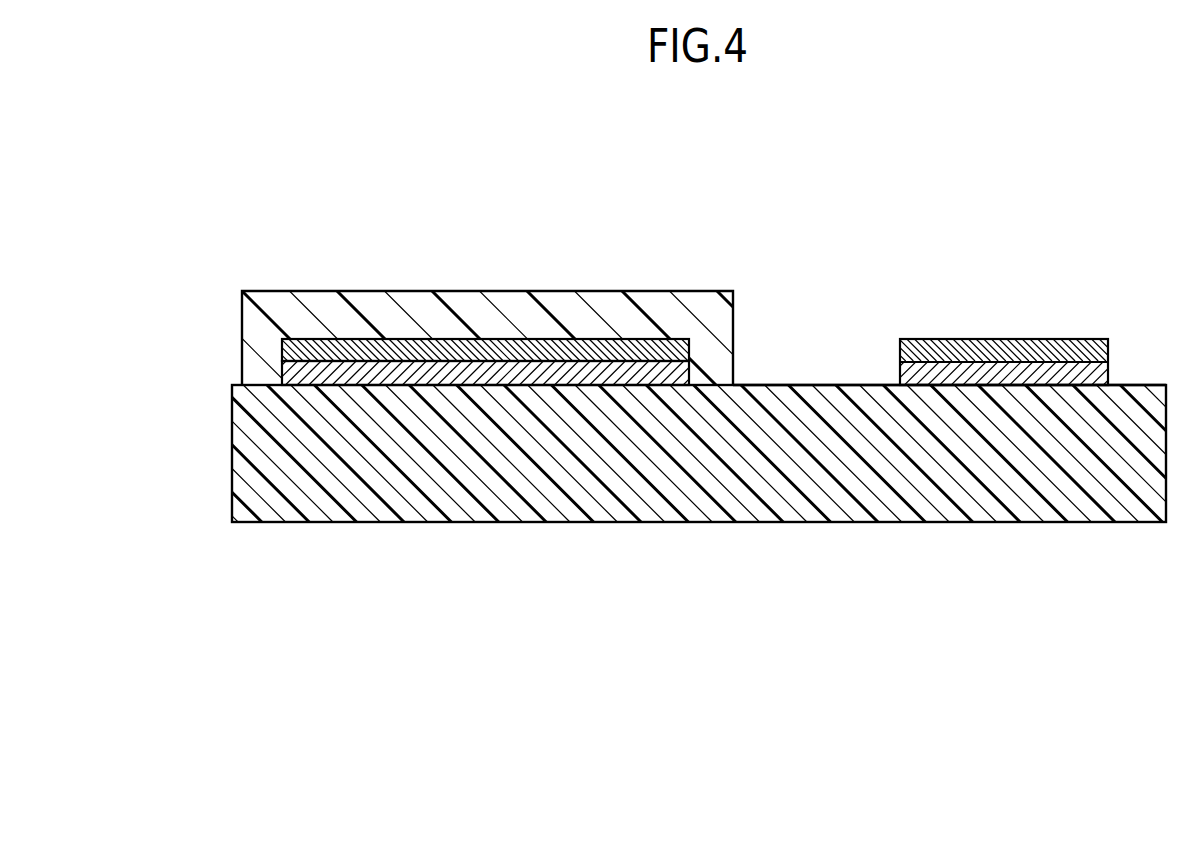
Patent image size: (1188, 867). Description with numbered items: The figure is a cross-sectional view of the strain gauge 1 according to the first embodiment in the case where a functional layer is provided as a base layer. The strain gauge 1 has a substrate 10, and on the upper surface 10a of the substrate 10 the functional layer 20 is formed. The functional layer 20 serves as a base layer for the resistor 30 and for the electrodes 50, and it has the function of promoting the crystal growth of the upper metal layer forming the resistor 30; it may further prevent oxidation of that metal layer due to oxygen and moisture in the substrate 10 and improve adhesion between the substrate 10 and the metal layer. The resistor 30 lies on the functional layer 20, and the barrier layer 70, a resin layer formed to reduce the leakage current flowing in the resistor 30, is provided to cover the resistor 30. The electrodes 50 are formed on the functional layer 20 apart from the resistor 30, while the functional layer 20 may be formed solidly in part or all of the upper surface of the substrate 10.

The strain gauge 1 is at (678, 397).
The substrate 10 is at (699, 482).
The upper surface of the substrate 10a is at (1137, 385).
The functional layer 20 is at (487, 375).
The resistor 30 is at (624, 350).
The electrodes 50 is at (1005, 345).
The barrier layer 70 is at (347, 305).